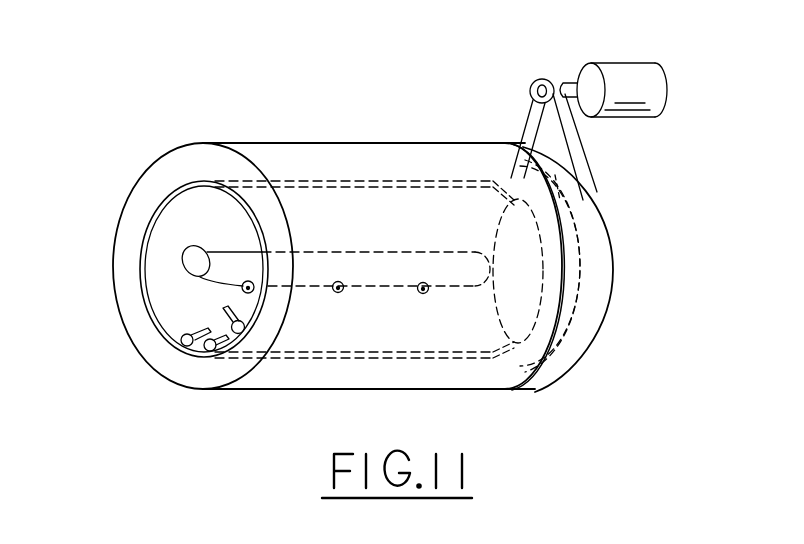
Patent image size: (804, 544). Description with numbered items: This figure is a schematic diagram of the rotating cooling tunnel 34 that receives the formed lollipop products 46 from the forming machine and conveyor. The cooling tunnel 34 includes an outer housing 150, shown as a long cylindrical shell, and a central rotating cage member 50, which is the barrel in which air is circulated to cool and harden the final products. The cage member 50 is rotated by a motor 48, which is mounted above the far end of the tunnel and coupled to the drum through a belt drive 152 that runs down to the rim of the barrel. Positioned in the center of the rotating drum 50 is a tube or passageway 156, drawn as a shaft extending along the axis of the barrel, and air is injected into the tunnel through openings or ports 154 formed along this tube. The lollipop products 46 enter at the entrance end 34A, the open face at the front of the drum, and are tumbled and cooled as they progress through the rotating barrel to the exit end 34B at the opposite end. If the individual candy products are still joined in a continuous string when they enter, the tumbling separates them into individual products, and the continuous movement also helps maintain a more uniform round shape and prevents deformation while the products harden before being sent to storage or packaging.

The cooling tunnel 34 is at (249, 391).
The entrance end 34A is at (168, 157).
The exit end 34B is at (546, 390).
The outer housing 150 is at (300, 144).
The central rotating cage member 50 is at (405, 182).
The tube or passageway 156 is at (190, 258).
The openings or ports 154 is at (255, 294).
The lollipop products 46 is at (220, 355).
The belt drive 152 is at (580, 157).
The motor 48 is at (637, 65).